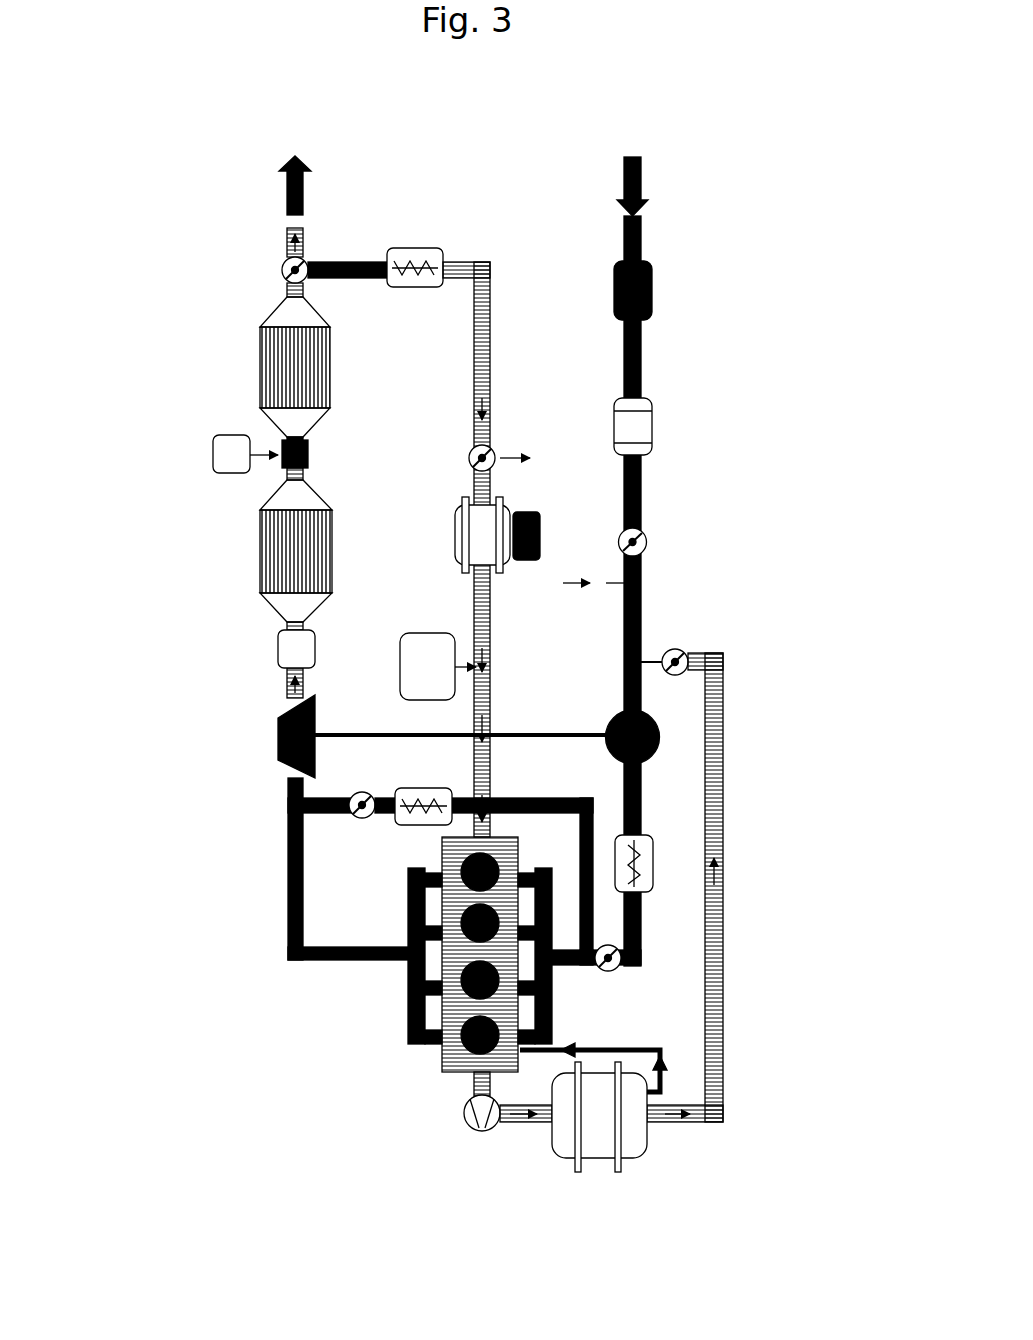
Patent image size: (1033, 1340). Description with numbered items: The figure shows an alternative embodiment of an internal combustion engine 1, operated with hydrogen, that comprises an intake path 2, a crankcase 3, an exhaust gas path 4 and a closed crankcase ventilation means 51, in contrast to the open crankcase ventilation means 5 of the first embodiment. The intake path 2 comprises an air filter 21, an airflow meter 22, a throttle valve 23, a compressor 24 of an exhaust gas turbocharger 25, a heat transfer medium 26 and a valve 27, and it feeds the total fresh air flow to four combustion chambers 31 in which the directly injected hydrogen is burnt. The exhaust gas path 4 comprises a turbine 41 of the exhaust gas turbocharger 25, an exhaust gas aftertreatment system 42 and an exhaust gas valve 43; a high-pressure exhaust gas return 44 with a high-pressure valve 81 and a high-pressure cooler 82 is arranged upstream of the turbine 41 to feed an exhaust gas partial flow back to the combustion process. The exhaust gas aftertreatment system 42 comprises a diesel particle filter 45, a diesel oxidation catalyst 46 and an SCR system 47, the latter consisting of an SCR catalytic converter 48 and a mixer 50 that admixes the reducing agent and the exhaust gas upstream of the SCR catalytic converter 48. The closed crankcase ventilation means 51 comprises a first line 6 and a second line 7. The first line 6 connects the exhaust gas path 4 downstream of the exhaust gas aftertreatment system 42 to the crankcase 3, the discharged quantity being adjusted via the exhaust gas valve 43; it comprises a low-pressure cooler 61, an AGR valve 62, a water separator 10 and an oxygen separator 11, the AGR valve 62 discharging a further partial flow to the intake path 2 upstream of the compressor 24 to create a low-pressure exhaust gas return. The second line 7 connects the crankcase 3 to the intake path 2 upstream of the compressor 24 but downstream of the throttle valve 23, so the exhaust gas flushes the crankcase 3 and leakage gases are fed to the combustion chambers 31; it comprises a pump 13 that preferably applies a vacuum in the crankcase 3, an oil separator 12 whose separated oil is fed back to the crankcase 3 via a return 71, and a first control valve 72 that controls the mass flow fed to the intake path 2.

The internal combustion engine 1 is at (200, 152).
The intake path 2 is at (566, 307).
The crankcase 3 is at (440, 1068).
The exhaust gas path 4 is at (176, 716).
The open crankcase ventilation means 5 is at (768, 960).
The first line 6 is at (475, 410).
The second line 7 is at (725, 715).
The water separator 10 is at (455, 527).
The oxygen separator 11 is at (400, 660).
The oil separator 12 is at (604, 1160).
The pump 13 is at (483, 1132).
The air filter 21 is at (612, 268).
The airflow meter 22 is at (615, 425).
The throttle valve 23 is at (647, 543).
The compressor 24 is at (660, 741).
The exhaust gas turbocharger 25 is at (520, 722).
The heat transfer medium 26 is at (655, 878).
The valve 27 is at (618, 968).
The combustion chambers 31 is at (468, 875).
The turbine 41 is at (282, 762).
The exhaust gas aftertreatment system 42 is at (176, 496).
The exhaust gas valve 43 is at (282, 268).
The high-pressure exhaust gas return 44 is at (378, 838).
The diesel particle filter 45 is at (278, 645).
The diesel oxidation catalyst 46 is at (260, 565).
The SCR system 47 is at (218, 396).
The SCR catalytic converter 48 is at (335, 360).
The mixer 50 is at (308, 455).
The closed crankcase ventilation means 51 is at (213, 445).
The low-pressure cooler 61 is at (392, 245).
The AGR valve 62 is at (470, 458).
The return 71 is at (662, 1052).
The first control valve 72 is at (690, 655).
The high-pressure valve 81 is at (352, 811).
The high-pressure cooler 82 is at (393, 816).